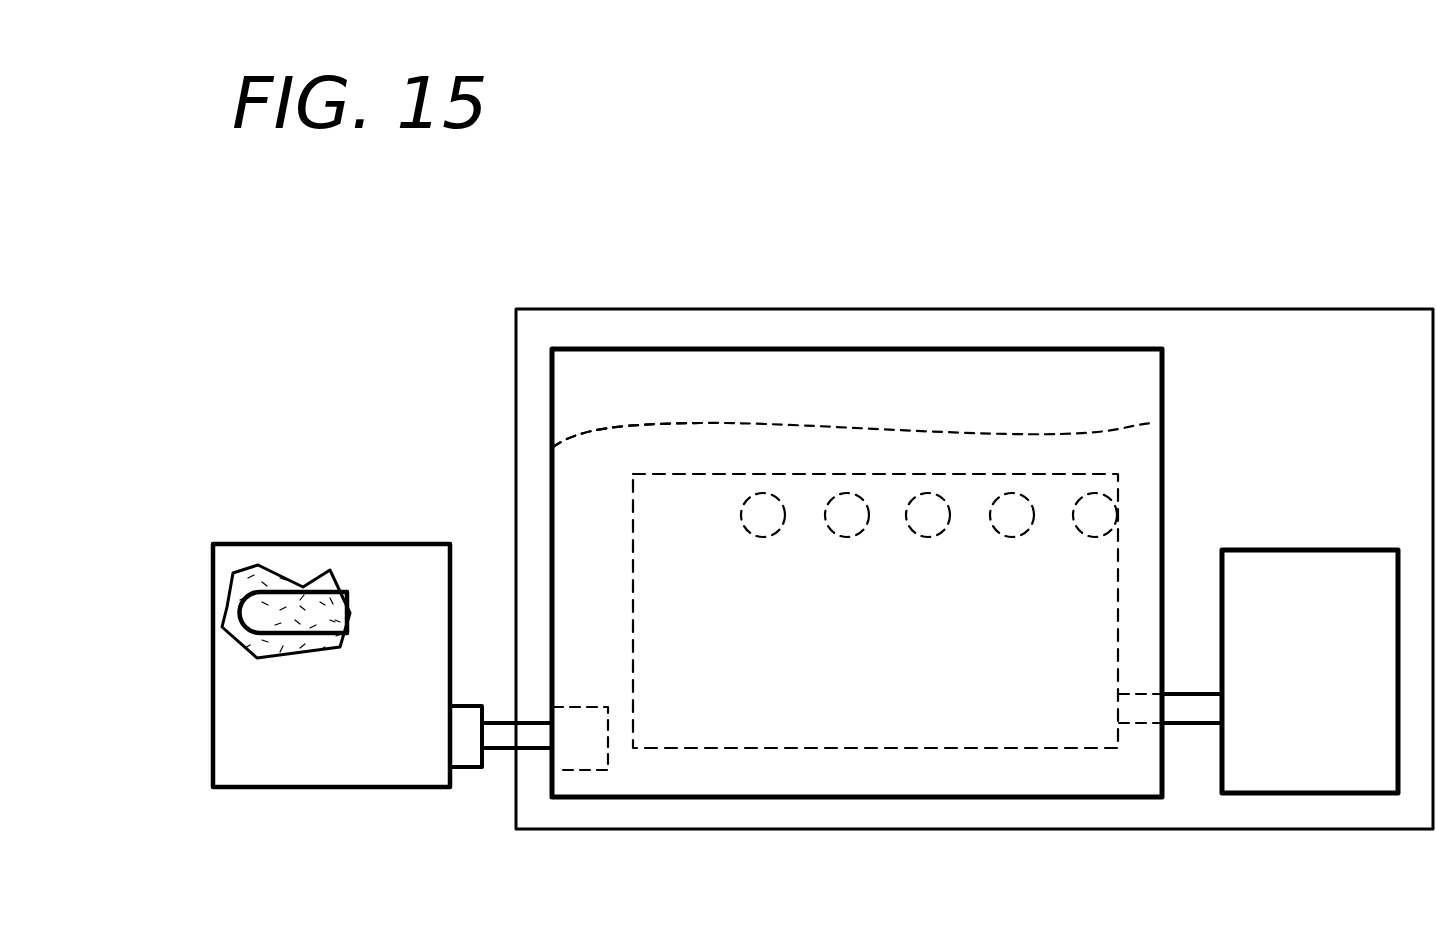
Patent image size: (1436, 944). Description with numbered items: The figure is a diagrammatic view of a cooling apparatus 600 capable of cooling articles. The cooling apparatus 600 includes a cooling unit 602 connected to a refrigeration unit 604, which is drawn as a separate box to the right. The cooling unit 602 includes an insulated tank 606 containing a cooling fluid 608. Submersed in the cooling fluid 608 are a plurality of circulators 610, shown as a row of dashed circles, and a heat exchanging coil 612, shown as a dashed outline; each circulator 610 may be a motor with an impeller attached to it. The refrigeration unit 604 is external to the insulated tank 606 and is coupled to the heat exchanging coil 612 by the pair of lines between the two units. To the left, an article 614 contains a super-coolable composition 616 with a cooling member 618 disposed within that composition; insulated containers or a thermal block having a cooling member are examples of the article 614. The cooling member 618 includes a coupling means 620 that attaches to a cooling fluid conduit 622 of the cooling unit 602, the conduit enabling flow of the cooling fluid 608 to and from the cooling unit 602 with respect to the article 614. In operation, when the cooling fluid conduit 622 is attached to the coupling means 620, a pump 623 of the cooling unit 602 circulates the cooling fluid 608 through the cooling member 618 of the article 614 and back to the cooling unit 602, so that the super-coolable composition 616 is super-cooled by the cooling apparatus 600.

The cooling apparatus 600 is at (858, 306).
The cooling unit 602 is at (1167, 372).
The refrigeration unit 604 is at (1256, 546).
The insulated tank 606 is at (1167, 437).
The cooling fluid 608 is at (602, 453).
The circulators 610 is at (910, 537).
The heat exchanging coil 612 is at (632, 502).
The article 614 is at (259, 540).
The super-coolable composition 616 is at (245, 585).
The cooling member 618 is at (240, 620).
The coupling means 620 is at (468, 769).
The cooling fluid conduit 622 is at (503, 752).
The pump 623 is at (592, 770).